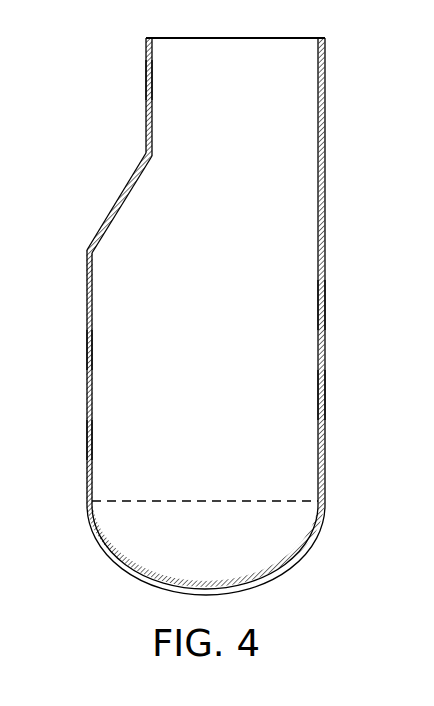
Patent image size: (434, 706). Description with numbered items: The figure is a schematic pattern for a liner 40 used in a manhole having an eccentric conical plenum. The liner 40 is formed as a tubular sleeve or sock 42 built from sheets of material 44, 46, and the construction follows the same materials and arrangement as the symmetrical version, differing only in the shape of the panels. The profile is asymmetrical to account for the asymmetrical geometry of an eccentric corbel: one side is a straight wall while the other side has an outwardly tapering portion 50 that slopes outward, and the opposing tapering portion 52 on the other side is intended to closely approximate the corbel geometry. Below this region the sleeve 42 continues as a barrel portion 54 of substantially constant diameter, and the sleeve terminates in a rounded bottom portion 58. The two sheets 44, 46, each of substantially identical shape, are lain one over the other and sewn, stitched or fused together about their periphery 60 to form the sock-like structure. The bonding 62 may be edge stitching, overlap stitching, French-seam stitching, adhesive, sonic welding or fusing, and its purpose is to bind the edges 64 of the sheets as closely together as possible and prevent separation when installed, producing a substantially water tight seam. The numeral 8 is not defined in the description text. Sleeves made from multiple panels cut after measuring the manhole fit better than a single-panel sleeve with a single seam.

The liner 40 is at (131, 44).
The reservoir 8 is at (131, 116).
The tubular sleeve or sock 42 is at (170, 82).
The outwardly tapering portion 50 is at (105, 197).
The sheet of material 46 is at (105, 298).
The periphery 60 is at (92, 350).
The bonding 62 is at (91, 440).
The sheet of material 44 is at (236, 218).
The outwardly tapering portion 52 is at (324, 203).
The barrel portion 54 is at (324, 305).
The edges 64 is at (324, 398).
The bottom portion 58 is at (324, 511).